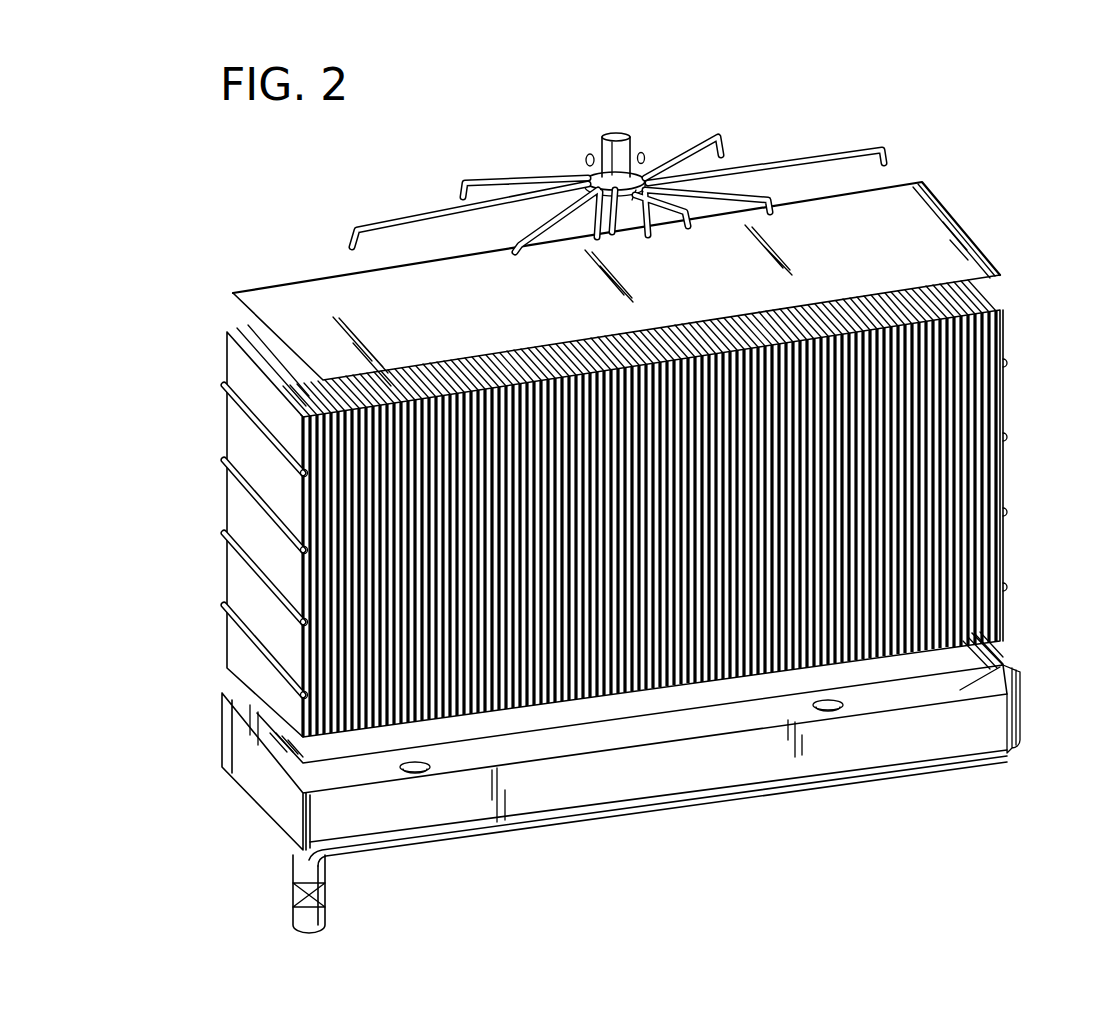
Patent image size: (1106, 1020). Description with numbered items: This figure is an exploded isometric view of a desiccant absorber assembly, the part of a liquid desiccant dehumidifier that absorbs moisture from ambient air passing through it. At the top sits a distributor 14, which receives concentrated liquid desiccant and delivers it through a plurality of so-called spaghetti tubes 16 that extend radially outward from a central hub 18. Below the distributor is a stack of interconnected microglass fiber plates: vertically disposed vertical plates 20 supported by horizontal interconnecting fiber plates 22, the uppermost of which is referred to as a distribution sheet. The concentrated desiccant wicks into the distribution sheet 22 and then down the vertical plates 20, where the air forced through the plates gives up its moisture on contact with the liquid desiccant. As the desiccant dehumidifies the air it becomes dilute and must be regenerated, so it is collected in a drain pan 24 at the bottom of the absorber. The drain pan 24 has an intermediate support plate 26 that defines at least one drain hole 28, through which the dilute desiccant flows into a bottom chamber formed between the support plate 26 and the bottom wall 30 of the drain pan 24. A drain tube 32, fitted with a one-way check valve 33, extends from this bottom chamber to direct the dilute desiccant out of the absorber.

The distributor 14 is at (633, 135).
The spaghetti tubes 16 is at (812, 155).
The central hub 18 is at (590, 158).
The vertical plates 20 is at (997, 473).
The horizontal interconnecting fiber plates 22 is at (962, 236).
The drain pan 24 is at (621, 758).
The intermediate support plate 26 is at (688, 723).
The drain hole 28 is at (415, 771).
The bottom wall 30 is at (558, 823).
The drain tube 32 is at (327, 868).
The check valve 33 is at (293, 895).